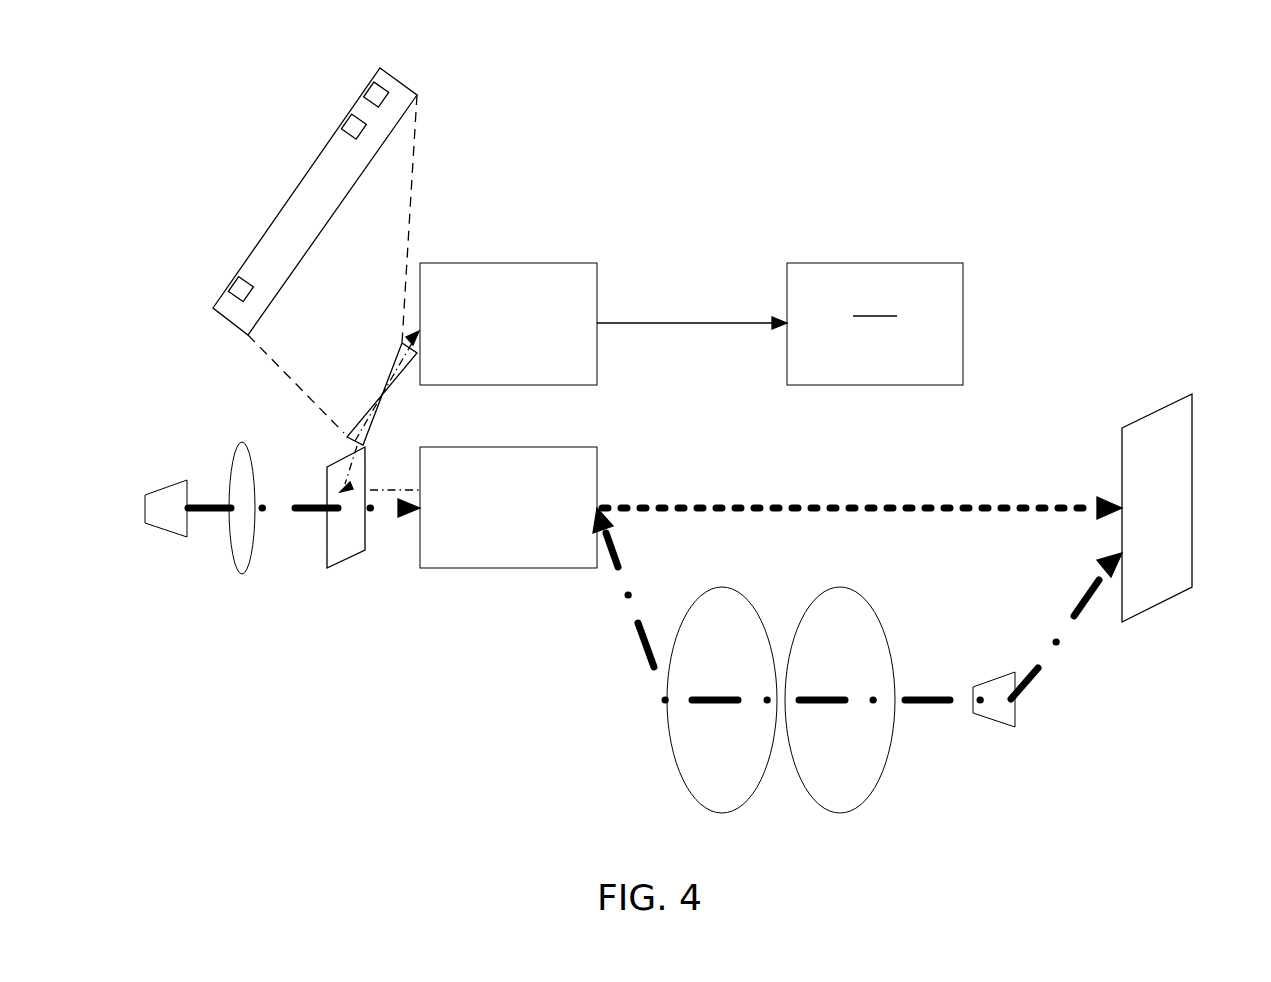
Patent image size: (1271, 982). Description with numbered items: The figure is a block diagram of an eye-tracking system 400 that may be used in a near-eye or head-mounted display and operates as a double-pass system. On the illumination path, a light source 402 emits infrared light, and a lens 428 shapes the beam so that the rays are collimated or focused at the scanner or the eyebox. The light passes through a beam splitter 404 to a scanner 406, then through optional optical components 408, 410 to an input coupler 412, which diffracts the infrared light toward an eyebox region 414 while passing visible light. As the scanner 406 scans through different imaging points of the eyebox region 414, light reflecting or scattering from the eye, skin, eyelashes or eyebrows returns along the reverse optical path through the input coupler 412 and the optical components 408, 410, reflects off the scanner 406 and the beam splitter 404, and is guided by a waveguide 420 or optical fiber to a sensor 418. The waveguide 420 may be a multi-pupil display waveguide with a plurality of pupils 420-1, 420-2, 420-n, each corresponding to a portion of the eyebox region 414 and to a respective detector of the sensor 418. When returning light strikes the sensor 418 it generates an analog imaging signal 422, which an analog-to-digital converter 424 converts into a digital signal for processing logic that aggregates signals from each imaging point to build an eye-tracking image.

The eye-tracking system 400 is at (609, 33).
The light source 402 is at (178, 480).
The beam splitter 404 is at (340, 450).
The scanner 406 is at (490, 535).
The optical component 408 is at (728, 583).
The optical component 410 is at (842, 583).
The input coupler 412 is at (995, 673).
The eyebox region 414 is at (1147, 418).
The sensor 418 is at (490, 350).
The waveguide 420 is at (376, 392).
The pupil 420-1 is at (368, 88).
The pupil 420-2 is at (344, 118).
The pupil 420-n is at (229, 277).
The imaging signal 422 is at (715, 322).
The analog-to-digital converter 424 is at (875, 324).
The lens 428 is at (243, 443).